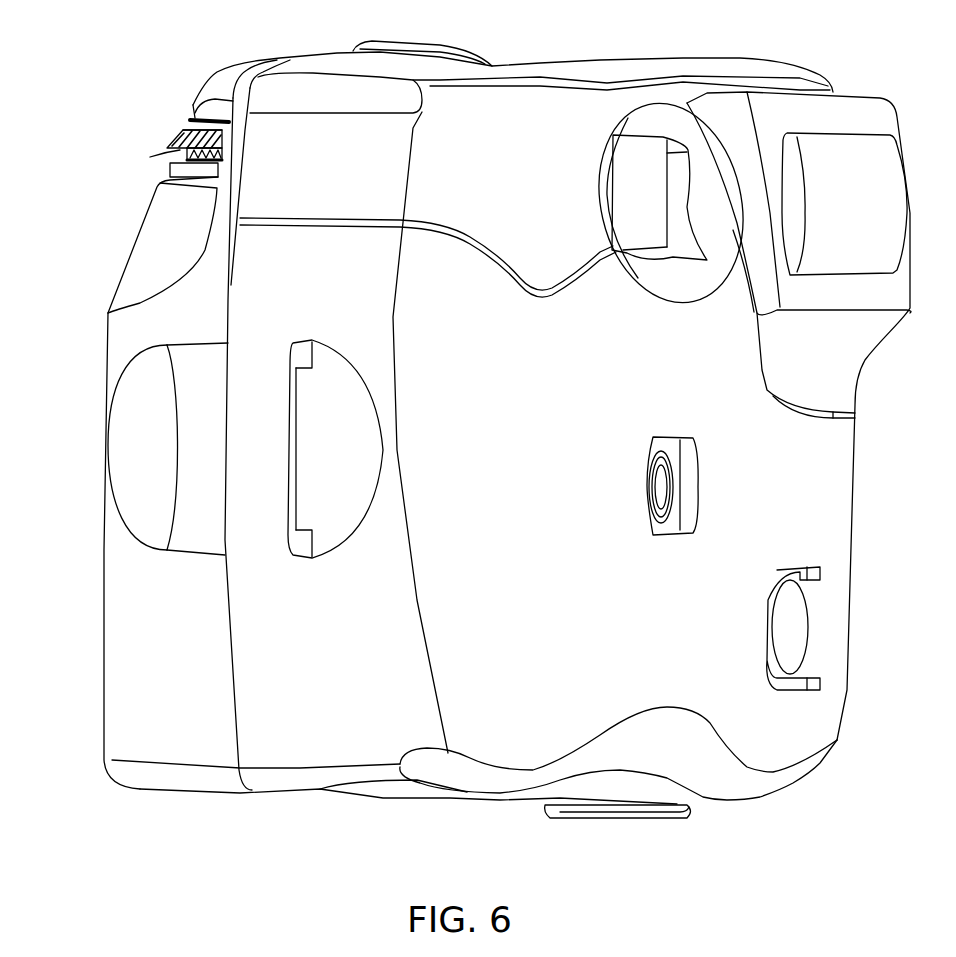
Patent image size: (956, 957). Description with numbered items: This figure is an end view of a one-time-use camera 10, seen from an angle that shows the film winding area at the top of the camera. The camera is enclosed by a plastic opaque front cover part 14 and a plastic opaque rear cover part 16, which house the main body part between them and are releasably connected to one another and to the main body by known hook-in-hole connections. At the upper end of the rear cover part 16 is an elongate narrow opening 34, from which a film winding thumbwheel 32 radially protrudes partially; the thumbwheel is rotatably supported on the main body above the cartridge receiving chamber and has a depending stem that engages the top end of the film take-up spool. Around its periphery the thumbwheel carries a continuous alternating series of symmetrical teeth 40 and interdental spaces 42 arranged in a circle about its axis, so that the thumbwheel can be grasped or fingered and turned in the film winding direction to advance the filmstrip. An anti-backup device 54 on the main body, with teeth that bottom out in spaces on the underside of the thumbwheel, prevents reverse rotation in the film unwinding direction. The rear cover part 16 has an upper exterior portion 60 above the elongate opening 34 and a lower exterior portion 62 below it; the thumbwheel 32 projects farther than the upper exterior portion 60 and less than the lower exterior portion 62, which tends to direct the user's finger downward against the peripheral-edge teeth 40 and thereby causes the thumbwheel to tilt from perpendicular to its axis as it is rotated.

The one-time-use camera 10 is at (88, 359).
The front cover part 14 is at (500, 493).
The rear cover part 16 is at (112, 628).
The film winding thumbwheel 32 is at (158, 136).
The elongate narrow opening 34 is at (193, 120).
The peripheral-edge symmetrical teeth 40 is at (219, 135).
The interdental spaces 42 is at (226, 144).
The anti-backup device 54 is at (219, 160).
The upper exterior portion 60 is at (207, 110).
The lower exterior portion 62 is at (173, 193).